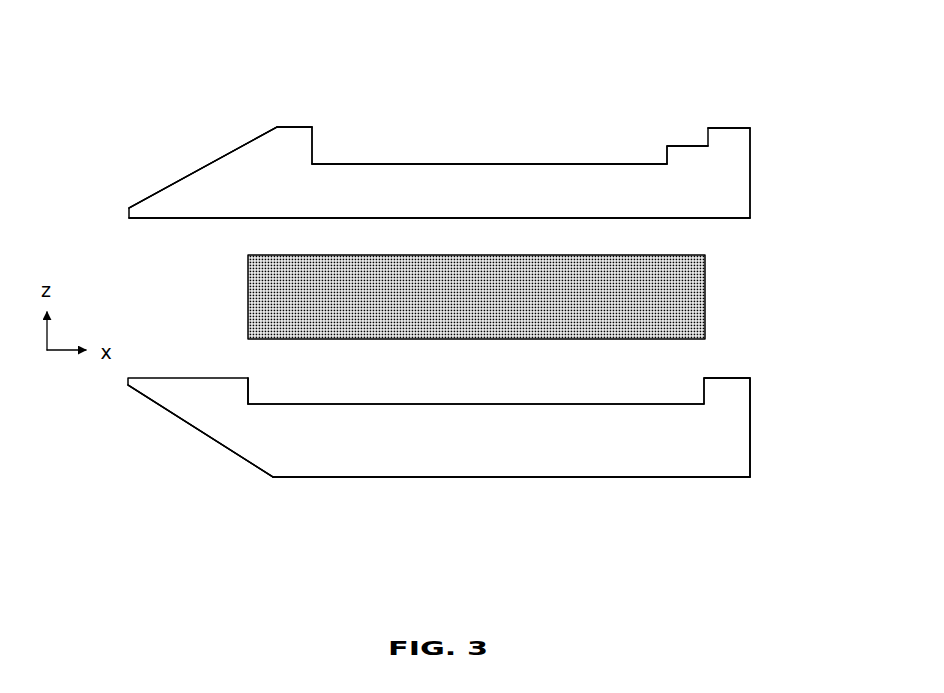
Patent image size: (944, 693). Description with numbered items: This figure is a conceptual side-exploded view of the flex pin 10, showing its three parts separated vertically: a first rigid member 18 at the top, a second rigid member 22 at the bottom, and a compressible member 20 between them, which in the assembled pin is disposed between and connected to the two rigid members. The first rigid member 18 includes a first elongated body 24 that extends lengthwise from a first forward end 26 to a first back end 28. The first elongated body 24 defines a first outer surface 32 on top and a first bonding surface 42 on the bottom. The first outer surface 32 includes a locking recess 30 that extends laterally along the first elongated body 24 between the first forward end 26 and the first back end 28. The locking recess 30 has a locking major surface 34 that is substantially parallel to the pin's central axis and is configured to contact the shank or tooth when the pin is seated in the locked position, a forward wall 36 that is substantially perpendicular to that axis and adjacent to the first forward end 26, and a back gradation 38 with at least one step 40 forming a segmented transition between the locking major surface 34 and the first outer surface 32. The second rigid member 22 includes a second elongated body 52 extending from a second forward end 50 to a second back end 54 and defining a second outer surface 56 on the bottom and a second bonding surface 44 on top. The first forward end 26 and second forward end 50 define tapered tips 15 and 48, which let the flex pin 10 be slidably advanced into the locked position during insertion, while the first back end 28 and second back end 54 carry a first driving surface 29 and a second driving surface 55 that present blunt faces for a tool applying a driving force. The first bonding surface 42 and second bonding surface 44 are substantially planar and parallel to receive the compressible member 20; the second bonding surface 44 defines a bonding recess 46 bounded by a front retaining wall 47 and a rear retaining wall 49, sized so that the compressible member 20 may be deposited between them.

The flex pin 10 is at (104, 270).
The tapered tip 15 is at (170, 185).
The first rigid member 18 is at (772, 174).
The compressible member 20 is at (476, 297).
The second rigid member 22 is at (772, 412).
The first elongated body 24 is at (439, 198).
The first forward end 26 is at (312, 108).
The first back end 28 is at (760, 108).
The first driving surface 29 is at (752, 193).
The locking recess 30 is at (312, 108).
The first outer surface 32 is at (296, 126).
The locking major surface 34 is at (538, 163).
The forward wall 36 is at (313, 153).
The back gradation 38 is at (708, 126).
The step 40 is at (677, 147).
The first bonding surface 42 is at (470, 220).
The second bonding surface 44 is at (408, 403).
The bonding recess 46 is at (272, 380).
The front retaining wall 47 is at (247, 392).
The tapered tip 48 is at (200, 430).
The rear retaining wall 49 is at (703, 392).
The second forward end 50 is at (277, 487).
The second elongated body 52 is at (511, 452).
The second back end 54 is at (705, 493).
The second driving surface 55 is at (752, 435).
The second outer surface 56 is at (408, 478).